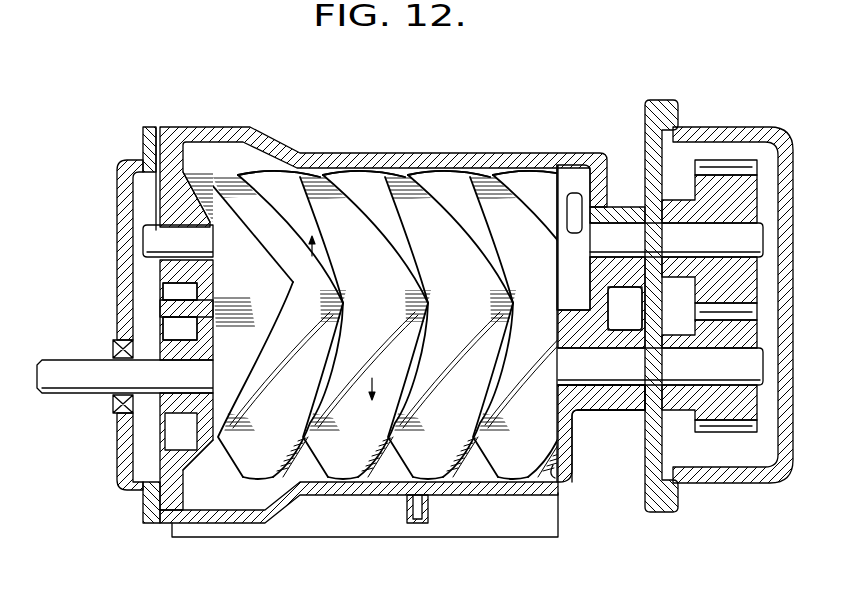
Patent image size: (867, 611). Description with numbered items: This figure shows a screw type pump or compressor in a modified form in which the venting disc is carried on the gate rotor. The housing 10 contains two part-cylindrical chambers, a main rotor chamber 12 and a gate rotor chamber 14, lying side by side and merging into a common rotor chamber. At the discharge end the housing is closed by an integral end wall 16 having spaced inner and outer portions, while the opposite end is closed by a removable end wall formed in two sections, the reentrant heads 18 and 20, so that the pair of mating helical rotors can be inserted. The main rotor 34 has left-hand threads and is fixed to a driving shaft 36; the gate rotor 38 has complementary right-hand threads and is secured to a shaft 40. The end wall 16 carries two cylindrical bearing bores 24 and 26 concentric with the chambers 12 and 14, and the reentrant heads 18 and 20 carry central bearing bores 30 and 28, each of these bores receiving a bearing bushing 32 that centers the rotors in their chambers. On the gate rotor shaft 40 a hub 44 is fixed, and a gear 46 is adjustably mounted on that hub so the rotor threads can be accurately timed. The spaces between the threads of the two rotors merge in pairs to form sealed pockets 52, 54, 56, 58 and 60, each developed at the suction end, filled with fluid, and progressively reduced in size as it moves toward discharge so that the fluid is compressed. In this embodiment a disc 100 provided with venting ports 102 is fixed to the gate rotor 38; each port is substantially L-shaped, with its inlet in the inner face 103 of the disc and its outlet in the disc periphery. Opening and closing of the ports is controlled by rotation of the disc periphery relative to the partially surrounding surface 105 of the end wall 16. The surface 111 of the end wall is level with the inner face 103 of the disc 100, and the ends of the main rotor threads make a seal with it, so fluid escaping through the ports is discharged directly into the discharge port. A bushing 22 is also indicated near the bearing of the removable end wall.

The housing 10 is at (210, 522).
The main rotor chamber 12 is at (380, 472).
The gate rotor chamber 14 is at (412, 341).
The end wall 16 is at (567, 449).
The reentrant head 18 is at (183, 194).
The reentrant head 20 is at (187, 458).
The bearing 22 is at (160, 287).
The bearing bore 24 is at (622, 398).
The bearing bore 26 is at (642, 205).
The bearing bore 28 is at (178, 398).
The bearing bore 30 is at (172, 205).
The bearing bushing 32 is at (180, 270).
The main rotor 34 is at (440, 450).
The driving shaft 36 is at (53, 367).
The gate rotor 38 is at (477, 177).
The gate rotor shaft 40 is at (160, 238).
The hub 44 is at (748, 213).
The gear 46 is at (750, 180).
The pocket 52 is at (541, 325).
The pocket 54 is at (456, 325).
The pocket 56 is at (371, 325).
The pocket 58 is at (286, 325).
The pocket 60 is at (253, 331).
The disc 100 is at (588, 168).
The venting port 102 is at (577, 234).
The inner face 103 is at (556, 190).
The surrounding surface 105 is at (594, 318).
The end wall surface 111 is at (555, 470).